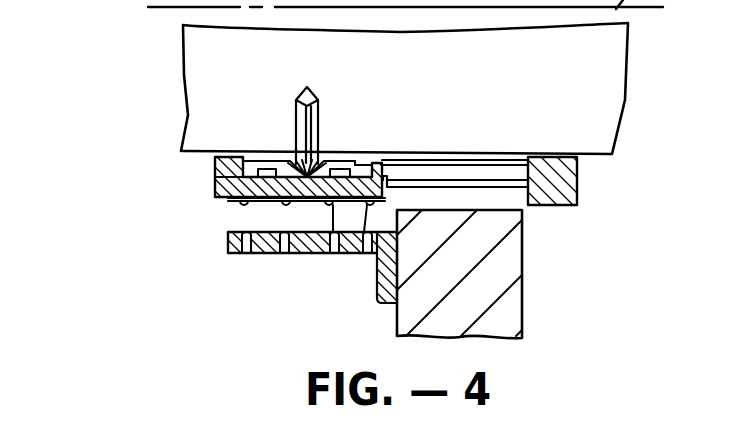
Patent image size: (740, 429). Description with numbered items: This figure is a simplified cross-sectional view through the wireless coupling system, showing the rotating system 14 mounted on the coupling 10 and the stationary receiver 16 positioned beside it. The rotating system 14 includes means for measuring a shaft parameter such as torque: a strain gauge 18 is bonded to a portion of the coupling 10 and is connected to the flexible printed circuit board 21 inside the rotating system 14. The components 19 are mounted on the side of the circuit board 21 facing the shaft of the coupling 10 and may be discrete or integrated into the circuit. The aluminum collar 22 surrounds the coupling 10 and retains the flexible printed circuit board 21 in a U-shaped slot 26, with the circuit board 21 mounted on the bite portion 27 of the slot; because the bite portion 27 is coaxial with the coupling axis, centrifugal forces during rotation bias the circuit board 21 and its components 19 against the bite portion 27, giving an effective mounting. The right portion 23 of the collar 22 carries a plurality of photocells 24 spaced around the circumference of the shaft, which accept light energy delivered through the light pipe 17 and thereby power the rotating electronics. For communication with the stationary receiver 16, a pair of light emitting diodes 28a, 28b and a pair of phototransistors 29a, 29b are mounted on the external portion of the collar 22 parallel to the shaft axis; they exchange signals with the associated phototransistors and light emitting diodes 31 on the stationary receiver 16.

The coupling 10 is at (183, 60).
The rotating system 14 is at (158, 190).
The stationary receiver 16 is at (194, 288).
The light pipe 17 is at (510, 255).
The strain gauge 18 is at (299, 97).
The components 19 is at (333, 168).
The flexible printed circuit board 21 is at (363, 164).
The collar 22 is at (577, 170).
The right portion of the collar 23 is at (493, 180).
The photocells 24 is at (462, 160).
The U-shaped slot 26 is at (256, 157).
The bite portion 27 is at (232, 197).
The light emitting diode 28a is at (243, 203).
The light emitting diode 28b is at (284, 205).
The phototransistor 29a is at (334, 253).
The phototransistor 29b is at (354, 253).
The phototransistors and light emitting diodes 31 is at (310, 289).